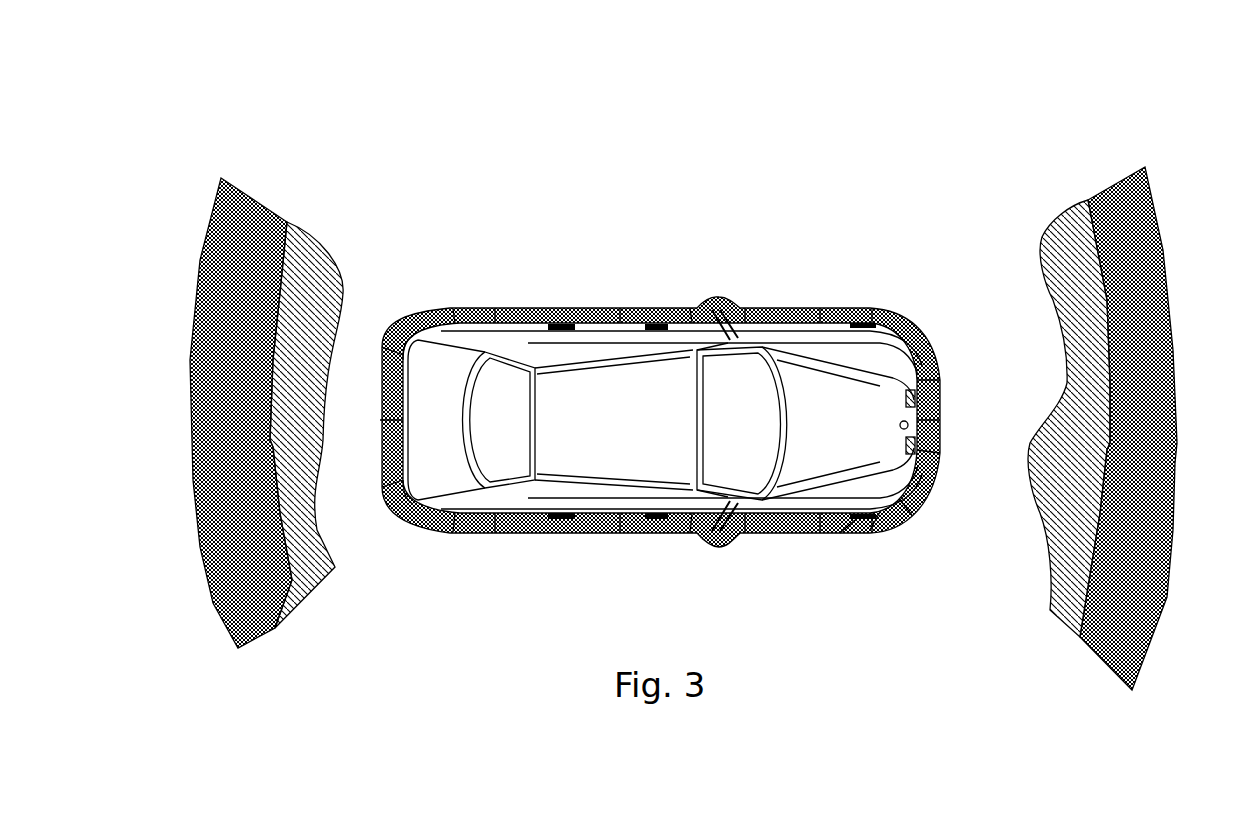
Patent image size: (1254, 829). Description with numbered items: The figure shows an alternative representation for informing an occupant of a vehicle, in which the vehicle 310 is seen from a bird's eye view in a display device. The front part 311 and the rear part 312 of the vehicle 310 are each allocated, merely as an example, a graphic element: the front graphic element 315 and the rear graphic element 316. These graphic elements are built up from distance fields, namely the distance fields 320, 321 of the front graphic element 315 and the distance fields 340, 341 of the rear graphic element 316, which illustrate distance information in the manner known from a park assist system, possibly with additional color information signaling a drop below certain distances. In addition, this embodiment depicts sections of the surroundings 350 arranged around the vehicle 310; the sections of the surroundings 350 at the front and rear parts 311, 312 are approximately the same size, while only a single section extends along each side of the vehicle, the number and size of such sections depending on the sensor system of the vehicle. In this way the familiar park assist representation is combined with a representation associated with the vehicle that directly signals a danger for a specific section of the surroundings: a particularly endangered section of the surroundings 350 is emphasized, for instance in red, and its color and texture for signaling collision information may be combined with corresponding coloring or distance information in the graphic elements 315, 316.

The vehicle 310 is at (660, 432).
The front part of vehicle 311 is at (811, 377).
The rear part of vehicle 312 is at (447, 369).
The front graphic element 315 is at (1094, 410).
The rear graphic element 316 is at (280, 397).
The distance field 320 is at (1052, 612).
The distance field 321 is at (1098, 658).
The distance field 340 is at (323, 588).
The distance field 341 is at (272, 632).
The section of the surroundings 350 is at (897, 540).